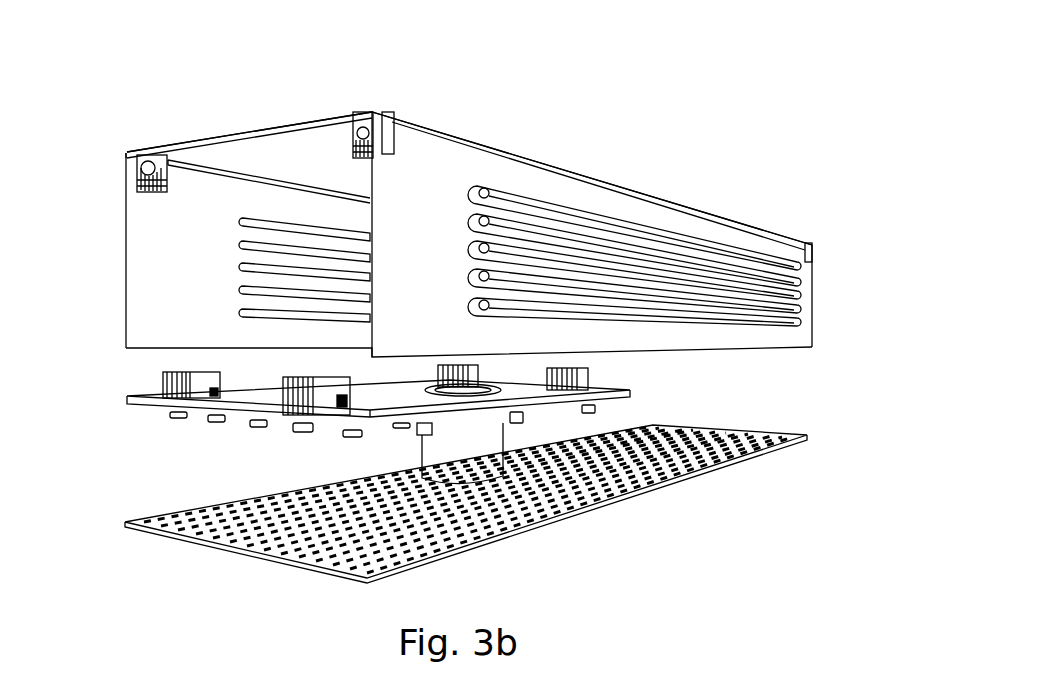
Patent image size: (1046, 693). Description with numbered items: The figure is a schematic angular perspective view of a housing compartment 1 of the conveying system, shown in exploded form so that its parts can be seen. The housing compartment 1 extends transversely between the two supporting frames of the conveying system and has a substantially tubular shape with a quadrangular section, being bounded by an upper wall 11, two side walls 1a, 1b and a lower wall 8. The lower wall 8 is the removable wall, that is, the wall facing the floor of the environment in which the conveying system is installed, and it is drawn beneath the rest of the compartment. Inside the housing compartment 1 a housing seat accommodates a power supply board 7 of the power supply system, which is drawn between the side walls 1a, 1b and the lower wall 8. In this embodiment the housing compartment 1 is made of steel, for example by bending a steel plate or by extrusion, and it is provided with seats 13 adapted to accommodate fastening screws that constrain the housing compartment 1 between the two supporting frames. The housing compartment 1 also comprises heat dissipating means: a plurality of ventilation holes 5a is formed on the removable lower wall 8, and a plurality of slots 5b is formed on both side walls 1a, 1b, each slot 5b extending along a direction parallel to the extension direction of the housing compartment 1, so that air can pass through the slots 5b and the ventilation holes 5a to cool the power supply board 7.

The housing compartment 1 is at (717, 150).
The side wall 1a is at (143, 247).
The side wall 1b is at (433, 157).
The upper wall 11 is at (260, 150).
The seats 13 is at (140, 170).
The ventilation holes 5a is at (277, 510).
The slots 5b is at (230, 288).
The power supply board 7 is at (650, 392).
The lower wall 8 is at (816, 444).